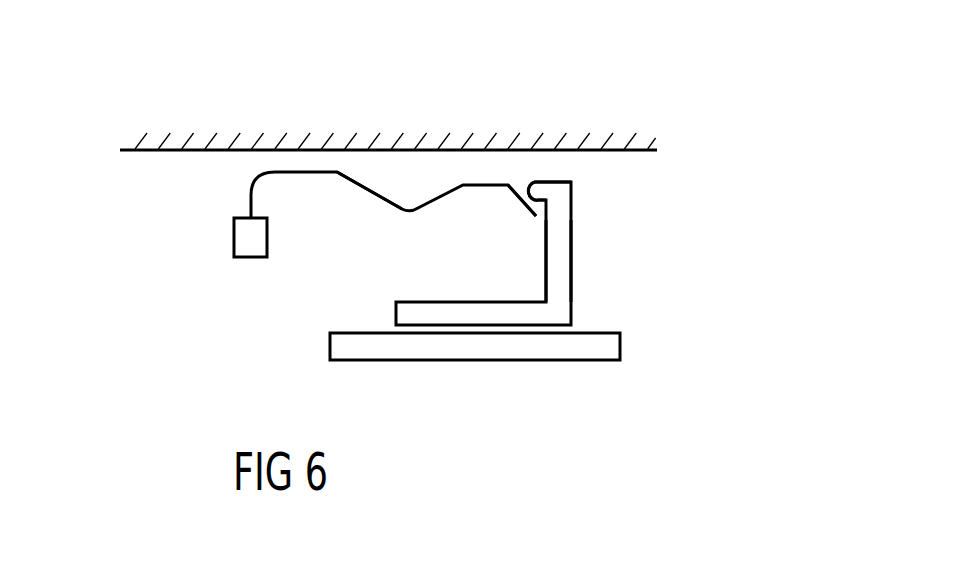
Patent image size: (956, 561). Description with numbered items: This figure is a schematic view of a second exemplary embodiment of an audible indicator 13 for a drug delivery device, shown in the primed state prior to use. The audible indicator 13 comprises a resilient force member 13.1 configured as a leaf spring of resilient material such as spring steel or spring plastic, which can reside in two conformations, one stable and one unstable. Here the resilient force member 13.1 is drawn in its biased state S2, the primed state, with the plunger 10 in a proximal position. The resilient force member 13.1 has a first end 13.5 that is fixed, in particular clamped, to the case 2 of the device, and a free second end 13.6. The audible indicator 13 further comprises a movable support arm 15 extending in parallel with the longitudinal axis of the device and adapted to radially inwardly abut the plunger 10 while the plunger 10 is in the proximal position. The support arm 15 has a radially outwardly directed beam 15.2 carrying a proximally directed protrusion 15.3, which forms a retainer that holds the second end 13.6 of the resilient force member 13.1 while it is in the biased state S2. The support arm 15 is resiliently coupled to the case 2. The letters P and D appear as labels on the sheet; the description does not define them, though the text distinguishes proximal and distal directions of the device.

The case 2 is at (153, 140).
The audible indicator 13 is at (255, 158).
The resilient force member 13.1 is at (367, 187).
The first end 13.5 is at (234, 240).
The second end 13.6 is at (527, 190).
The biased state S2 is at (453, 158).
The support arm 15 is at (455, 312).
The beam 15.2 is at (562, 262).
The protrusion 15.3 is at (538, 185).
The plunger 10 is at (617, 353).
The position P is at (111, 337).
The direction D is at (782, 277).